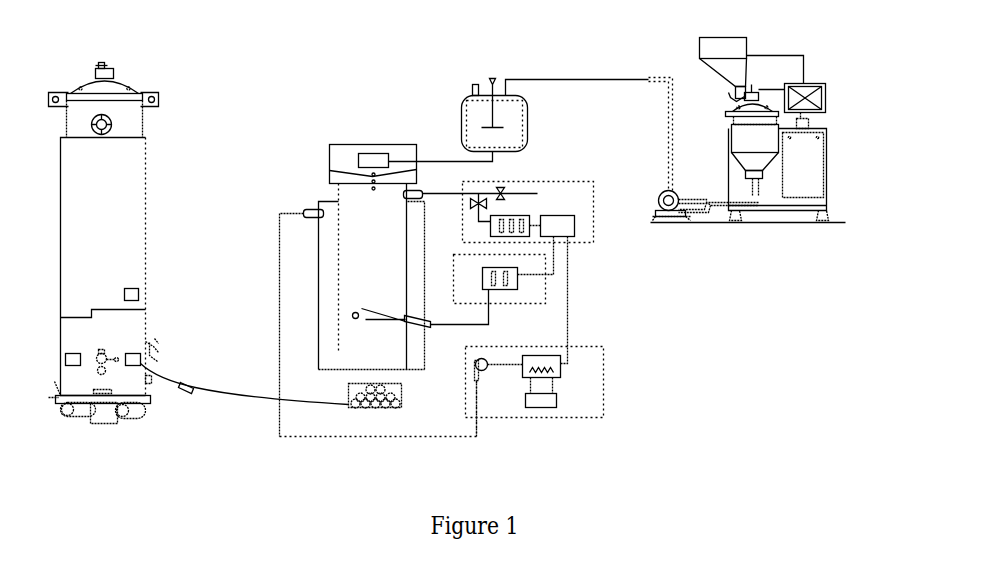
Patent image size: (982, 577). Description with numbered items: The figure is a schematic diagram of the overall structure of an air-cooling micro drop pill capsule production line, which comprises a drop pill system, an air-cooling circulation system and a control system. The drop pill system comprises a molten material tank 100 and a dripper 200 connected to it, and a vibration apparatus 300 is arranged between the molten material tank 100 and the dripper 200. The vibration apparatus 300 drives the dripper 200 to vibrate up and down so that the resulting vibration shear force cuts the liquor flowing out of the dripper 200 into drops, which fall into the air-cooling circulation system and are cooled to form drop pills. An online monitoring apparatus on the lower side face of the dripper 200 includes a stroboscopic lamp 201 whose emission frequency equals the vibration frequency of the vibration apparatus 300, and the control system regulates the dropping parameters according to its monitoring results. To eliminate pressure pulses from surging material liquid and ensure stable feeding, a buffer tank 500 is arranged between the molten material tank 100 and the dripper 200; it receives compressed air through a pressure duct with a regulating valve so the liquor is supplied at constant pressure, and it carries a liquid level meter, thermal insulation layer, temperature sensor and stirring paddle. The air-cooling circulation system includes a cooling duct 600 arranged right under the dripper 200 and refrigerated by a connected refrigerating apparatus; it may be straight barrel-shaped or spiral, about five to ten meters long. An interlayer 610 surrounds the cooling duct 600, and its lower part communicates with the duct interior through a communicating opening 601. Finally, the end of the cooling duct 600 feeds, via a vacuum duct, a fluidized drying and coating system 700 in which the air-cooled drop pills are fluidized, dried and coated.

The molten material tank 100 is at (750, 139).
The dripper 200 is at (353, 171).
The stroboscopic lamp 201 is at (412, 170).
The vibration apparatus 300 is at (366, 159).
The buffer tank 500 is at (479, 117).
The cooling duct 600 is at (372, 256).
The communicating opening 601 is at (338, 362).
The interlayer 610 is at (327, 284).
The fluidized drying and coating system 700 is at (121, 190).